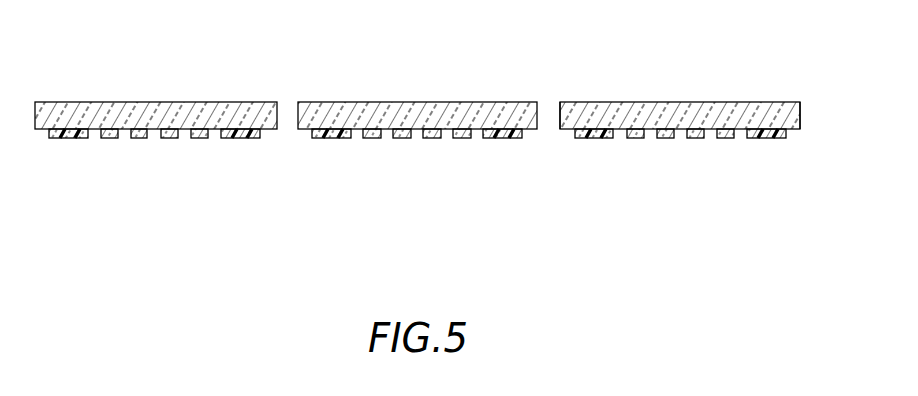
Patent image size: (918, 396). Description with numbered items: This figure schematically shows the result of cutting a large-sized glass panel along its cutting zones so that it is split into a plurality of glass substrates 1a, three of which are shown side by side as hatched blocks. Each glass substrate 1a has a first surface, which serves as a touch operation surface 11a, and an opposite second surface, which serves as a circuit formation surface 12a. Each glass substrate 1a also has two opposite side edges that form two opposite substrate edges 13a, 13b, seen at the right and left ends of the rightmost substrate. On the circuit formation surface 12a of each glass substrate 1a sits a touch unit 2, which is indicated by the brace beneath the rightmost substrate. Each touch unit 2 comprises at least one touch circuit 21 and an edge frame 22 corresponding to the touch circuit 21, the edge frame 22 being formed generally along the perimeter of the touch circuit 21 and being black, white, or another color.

The glass substrate 1a is at (153, 118).
The touch operation surface 11a is at (764, 102).
The circuit formation surface 12a is at (718, 170).
The substrate edge 13a is at (862, 142).
The substrate edge 13b is at (560, 118).
The touch circuit 21 is at (725, 139).
The edge frame 22 is at (692, 170).
The touch unit 2 is at (691, 158).